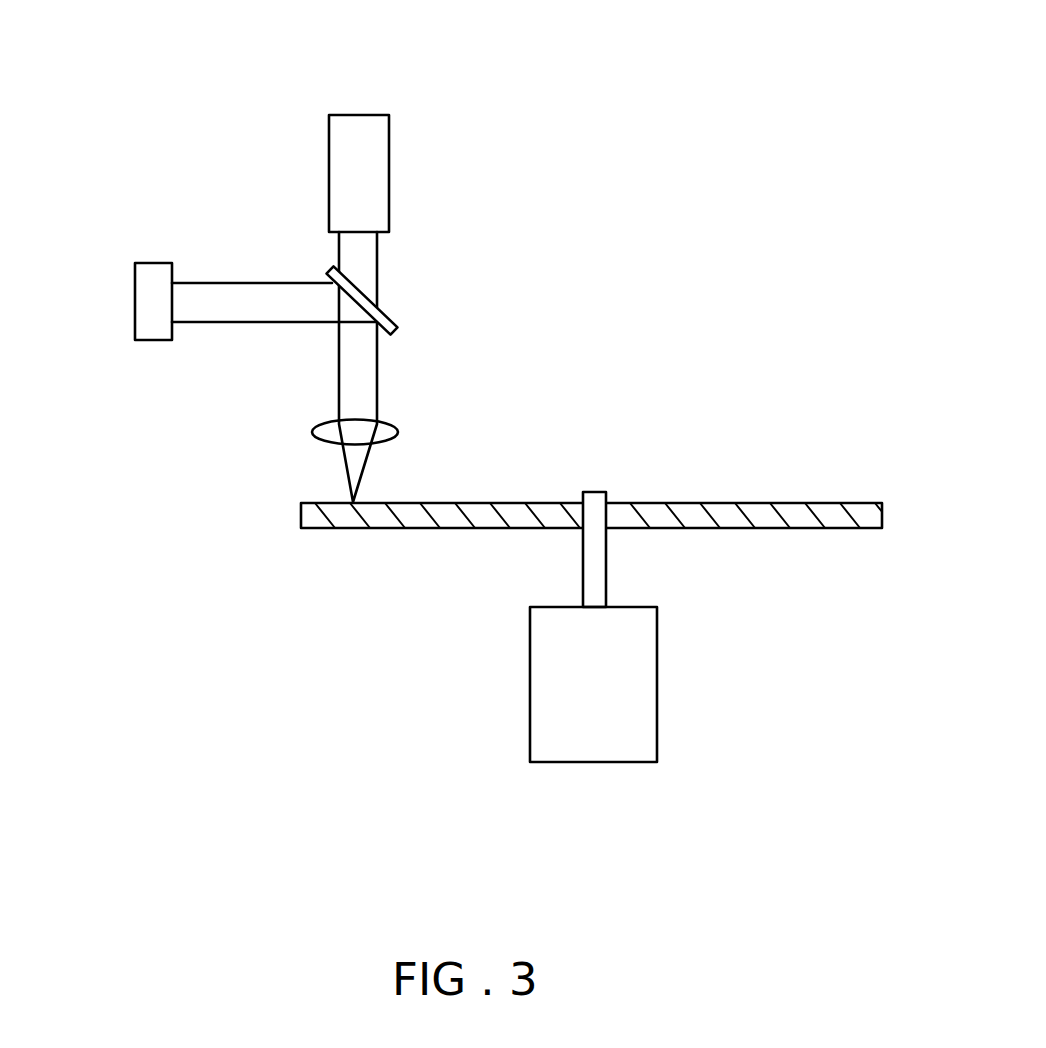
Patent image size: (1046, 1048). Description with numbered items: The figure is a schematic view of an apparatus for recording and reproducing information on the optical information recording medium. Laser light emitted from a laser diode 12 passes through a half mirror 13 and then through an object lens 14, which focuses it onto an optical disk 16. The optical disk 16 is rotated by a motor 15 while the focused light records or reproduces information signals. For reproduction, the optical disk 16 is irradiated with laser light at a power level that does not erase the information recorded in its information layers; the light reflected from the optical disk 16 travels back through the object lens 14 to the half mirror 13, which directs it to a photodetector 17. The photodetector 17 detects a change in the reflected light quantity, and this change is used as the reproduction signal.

The laser diode 12 is at (390, 177).
The half mirror 13 is at (393, 314).
The object lens 14 is at (398, 429).
The motor 15 is at (528, 695).
The optical disk 16 is at (793, 530).
The photodetector 17 is at (153, 263).